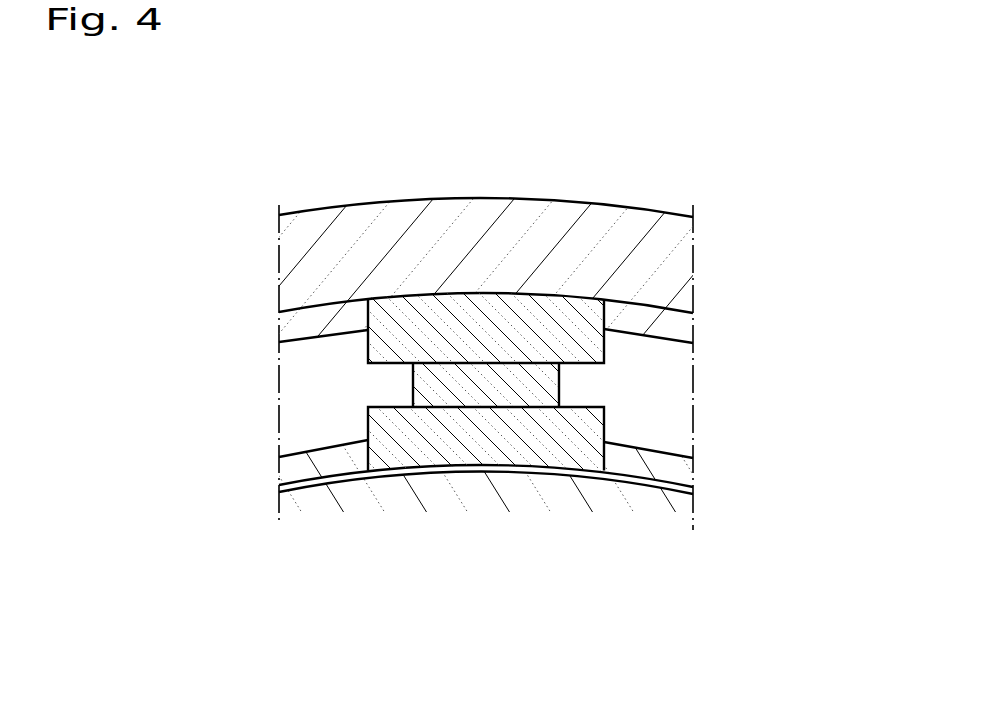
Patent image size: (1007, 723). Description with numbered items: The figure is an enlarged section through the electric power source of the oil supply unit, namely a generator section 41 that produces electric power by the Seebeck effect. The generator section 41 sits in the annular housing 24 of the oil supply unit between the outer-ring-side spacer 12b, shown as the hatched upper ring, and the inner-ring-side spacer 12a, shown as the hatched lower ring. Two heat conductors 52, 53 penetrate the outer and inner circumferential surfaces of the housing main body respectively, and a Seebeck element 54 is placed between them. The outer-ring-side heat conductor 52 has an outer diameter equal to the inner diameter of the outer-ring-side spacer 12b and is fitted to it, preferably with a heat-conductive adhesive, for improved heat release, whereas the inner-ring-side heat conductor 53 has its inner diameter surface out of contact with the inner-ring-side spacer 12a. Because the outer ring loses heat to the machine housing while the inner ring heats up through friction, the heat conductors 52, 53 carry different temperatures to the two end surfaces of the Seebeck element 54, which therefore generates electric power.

The inner-ring-side spacer 12a is at (665, 497).
The outer-ring-side spacer 12b is at (668, 270).
The annular housing 24 is at (641, 341).
The generator section 41 is at (487, 284).
The heat conductor 52 is at (549, 312).
The heat conductor 53 is at (527, 450).
The Seebeck element 54 is at (428, 390).